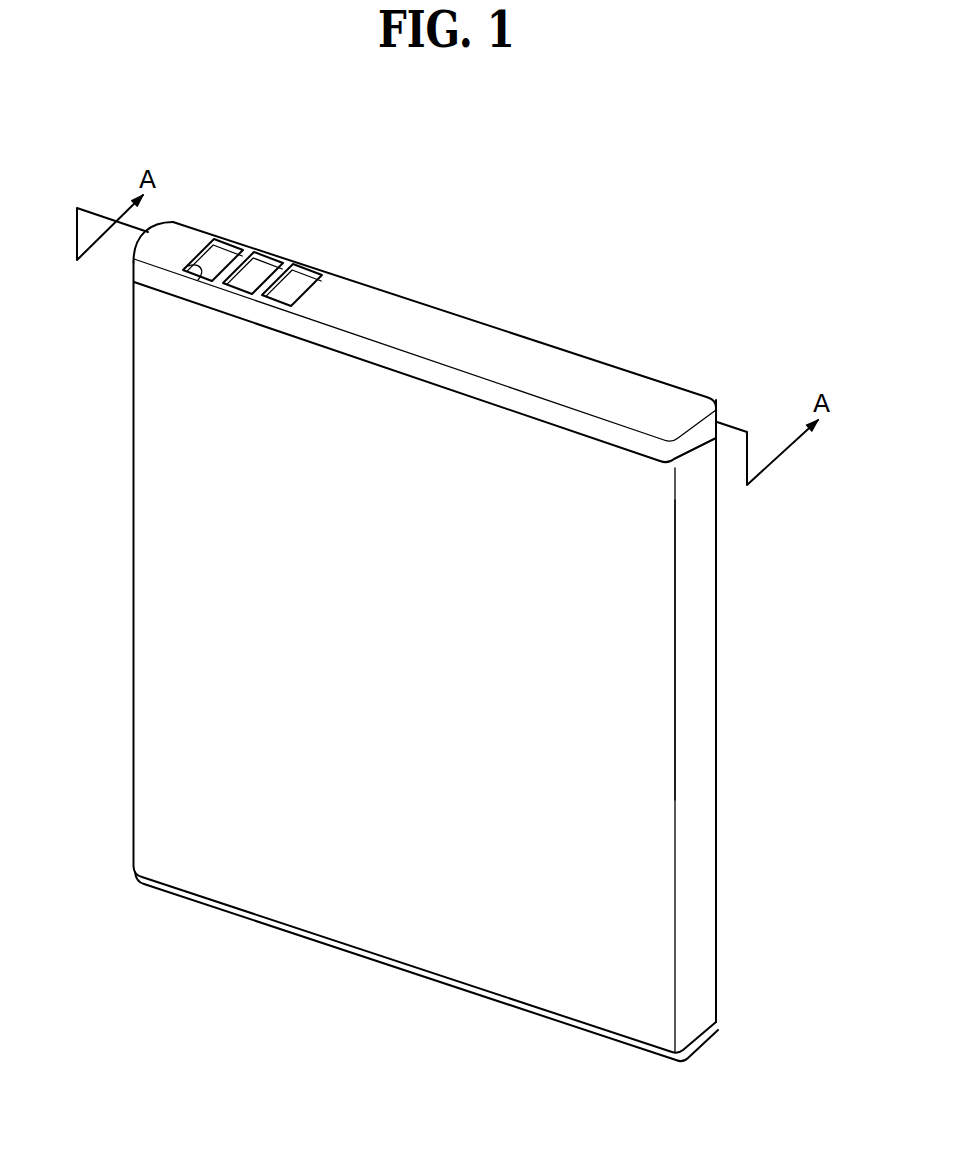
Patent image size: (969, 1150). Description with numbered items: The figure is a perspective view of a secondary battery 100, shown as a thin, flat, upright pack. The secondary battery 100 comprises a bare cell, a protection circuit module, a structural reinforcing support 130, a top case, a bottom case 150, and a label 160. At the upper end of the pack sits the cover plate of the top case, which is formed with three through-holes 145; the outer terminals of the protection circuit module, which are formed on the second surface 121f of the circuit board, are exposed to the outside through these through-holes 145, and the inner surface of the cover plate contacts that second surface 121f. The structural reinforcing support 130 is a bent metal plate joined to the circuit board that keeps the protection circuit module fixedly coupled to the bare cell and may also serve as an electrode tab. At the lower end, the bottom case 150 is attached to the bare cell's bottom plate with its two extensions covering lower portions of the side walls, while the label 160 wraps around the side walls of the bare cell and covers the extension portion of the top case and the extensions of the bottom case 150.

The secondary battery 100 is at (832, 202).
The structural reinforcing support 130 is at (510, 348).
The second surface 121f is at (300, 277).
The through-holes 145 is at (198, 280).
The bottom case 150 is at (707, 1038).
The label 160 is at (695, 648).